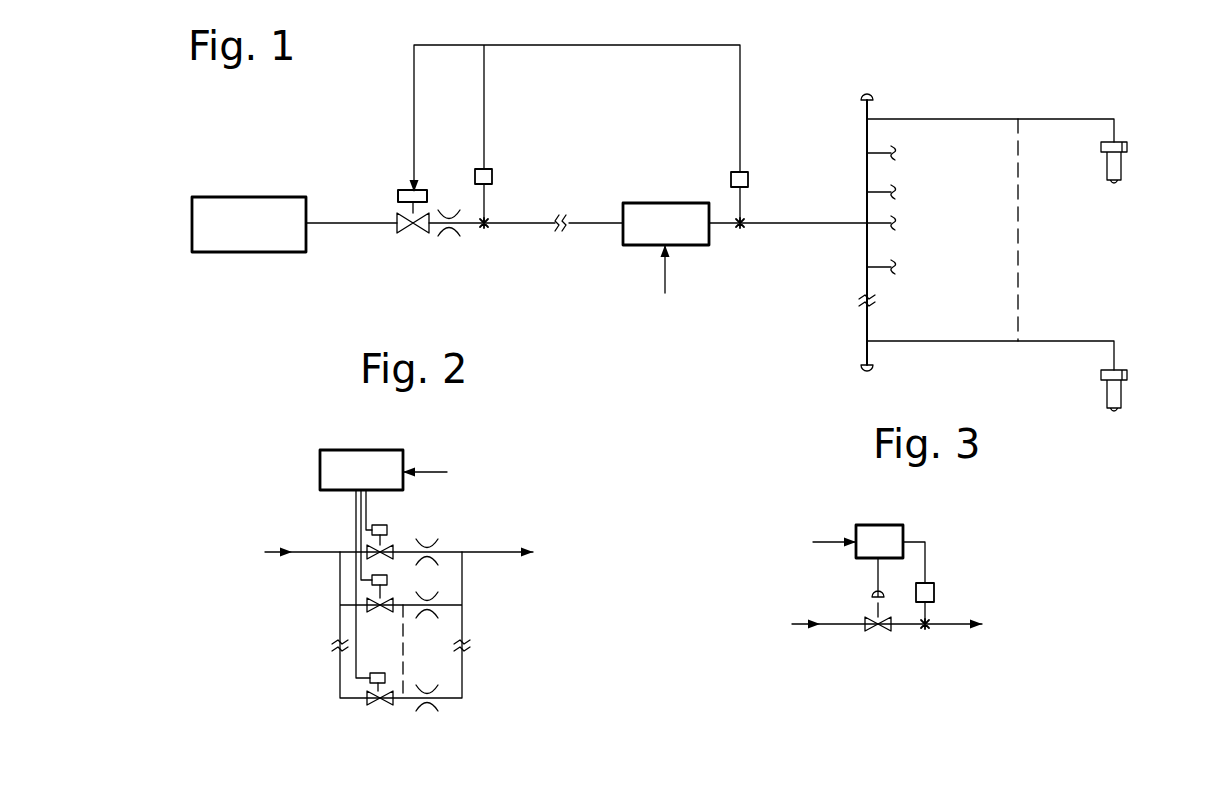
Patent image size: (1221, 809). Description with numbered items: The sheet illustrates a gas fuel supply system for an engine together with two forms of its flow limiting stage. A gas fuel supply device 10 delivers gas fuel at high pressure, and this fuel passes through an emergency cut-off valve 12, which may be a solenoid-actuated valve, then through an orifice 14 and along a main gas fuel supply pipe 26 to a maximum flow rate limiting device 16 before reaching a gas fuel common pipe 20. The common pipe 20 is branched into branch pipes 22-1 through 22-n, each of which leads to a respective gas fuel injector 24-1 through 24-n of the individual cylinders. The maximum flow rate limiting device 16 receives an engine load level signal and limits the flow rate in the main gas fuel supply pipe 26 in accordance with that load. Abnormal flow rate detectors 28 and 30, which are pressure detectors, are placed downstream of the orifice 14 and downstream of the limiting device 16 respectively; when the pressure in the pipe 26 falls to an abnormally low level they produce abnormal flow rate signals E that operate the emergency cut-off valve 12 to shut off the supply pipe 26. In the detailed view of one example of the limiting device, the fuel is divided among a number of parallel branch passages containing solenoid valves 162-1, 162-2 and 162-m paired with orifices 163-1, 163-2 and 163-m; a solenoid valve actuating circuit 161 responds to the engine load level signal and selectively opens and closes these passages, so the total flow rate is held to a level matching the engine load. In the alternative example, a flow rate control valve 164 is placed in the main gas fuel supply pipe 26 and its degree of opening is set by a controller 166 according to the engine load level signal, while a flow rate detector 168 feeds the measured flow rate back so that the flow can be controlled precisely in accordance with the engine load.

In FIG. 1, the gas fuel supply device 10 is at (292, 197).
In FIG. 1, the emergency cut-off valve 12 is at (425, 215).
In FIG. 1, the orifice 14 is at (451, 237).
In FIG. 1, the maximum flow rate limiting device 16 is at (661, 203).
In FIG. 1, the gas fuel common pipe 20 is at (866, 140).
In FIG. 1, the branch pipe 22-1 is at (1058, 119).
In FIG. 1, the branch pipe 22-n is at (1048, 341).
In FIG. 1, the gas fuel injector 24-1 is at (1127, 147).
In FIG. 1, the gas fuel injector 24-n is at (1122, 394).
In FIG. 1, the main gas fuel supply pipe 26 is at (586, 222).
In FIG. 2, the main gas fuel supply pipe 26 is at (302, 548).
In FIG. 3, the main gas fuel supply pipe 26 is at (832, 628).
In FIG. 1, the abnormal flow rate detector 28 is at (492, 176).
In FIG. 1, the abnormal flow rate detector 30 is at (740, 172).
In FIG. 1, the abnormal flow rate signal E is at (413, 88).
In FIG. 2, the solenoid valve actuating circuit 161 is at (395, 450).
In FIG. 2, the solenoid valve 162-1 is at (390, 548).
In FIG. 2, the solenoid valve 162-2 is at (392, 602).
In FIG. 2, the solenoid valve 162-m is at (378, 708).
In FIG. 2, the orifice 163-1 is at (440, 548).
In FIG. 2, the orifice 163-2 is at (440, 598).
In FIG. 2, the orifice 163-m is at (430, 708).
In FIG. 3, the flow rate control valve 164 is at (879, 632).
In FIG. 3, the controller 166 is at (882, 525).
In FIG. 3, the flow rate detector 168 is at (934, 593).